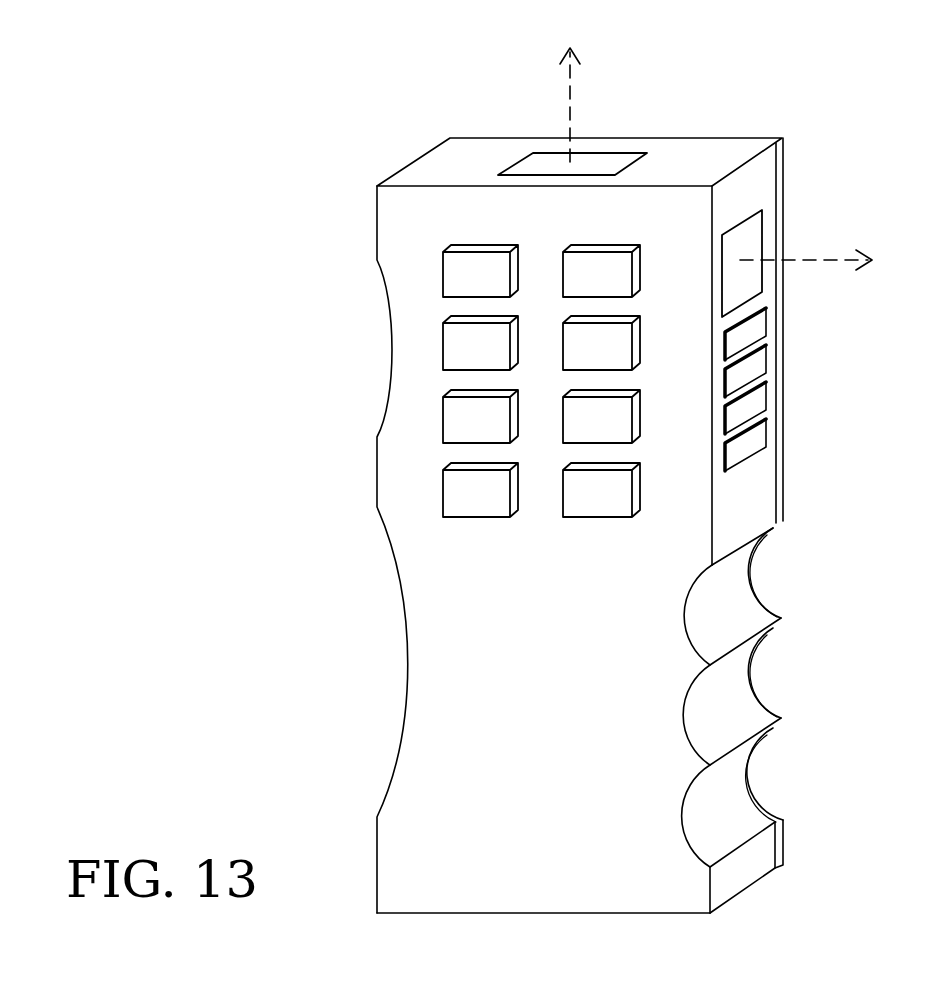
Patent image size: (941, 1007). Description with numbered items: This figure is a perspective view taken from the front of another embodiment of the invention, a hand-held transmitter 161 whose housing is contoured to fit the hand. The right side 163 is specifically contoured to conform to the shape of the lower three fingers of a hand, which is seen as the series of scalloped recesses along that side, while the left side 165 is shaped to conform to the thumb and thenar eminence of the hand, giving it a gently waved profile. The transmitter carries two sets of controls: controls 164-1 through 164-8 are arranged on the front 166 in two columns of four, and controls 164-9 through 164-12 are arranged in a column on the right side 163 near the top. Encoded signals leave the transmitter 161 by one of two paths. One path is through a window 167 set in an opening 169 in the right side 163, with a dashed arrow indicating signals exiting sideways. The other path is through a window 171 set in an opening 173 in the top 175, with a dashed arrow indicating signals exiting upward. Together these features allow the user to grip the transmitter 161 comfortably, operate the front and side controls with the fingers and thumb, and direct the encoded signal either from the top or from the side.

The transmitter 161 is at (528, 535).
The right side 163 is at (808, 389).
The control 164-1 is at (483, 262).
The control 164-8 is at (608, 495).
The control 164-9 is at (748, 335).
The control 164-12 is at (753, 437).
The left side 165 is at (375, 463).
The front 166 is at (518, 895).
The window 167 is at (747, 273).
The opening 169 is at (748, 228).
The window 171 is at (598, 165).
The opening 173 is at (622, 165).
The top 175 is at (445, 165).